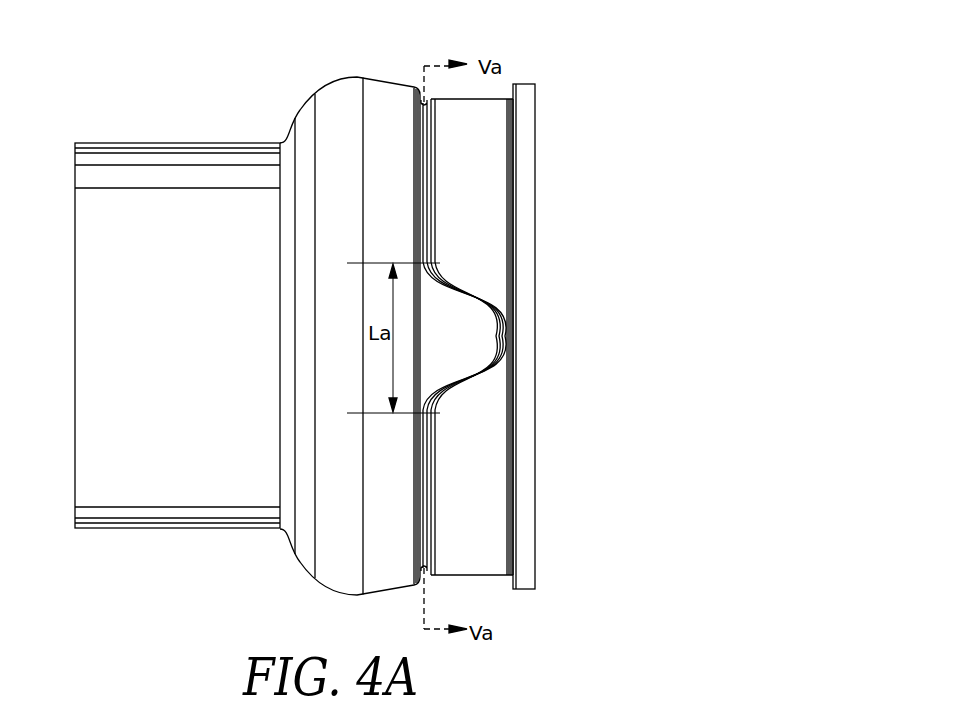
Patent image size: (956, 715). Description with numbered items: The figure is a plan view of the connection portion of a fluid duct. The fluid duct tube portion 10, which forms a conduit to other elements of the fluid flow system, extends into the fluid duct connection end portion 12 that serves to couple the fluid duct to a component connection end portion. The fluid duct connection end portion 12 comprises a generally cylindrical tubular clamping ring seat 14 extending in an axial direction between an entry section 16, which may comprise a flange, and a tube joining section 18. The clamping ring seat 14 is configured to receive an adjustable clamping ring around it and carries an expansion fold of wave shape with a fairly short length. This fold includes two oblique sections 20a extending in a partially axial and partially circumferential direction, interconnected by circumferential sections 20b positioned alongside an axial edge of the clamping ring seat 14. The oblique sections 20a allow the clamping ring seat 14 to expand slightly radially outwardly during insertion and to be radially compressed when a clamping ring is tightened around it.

The fluid duct tube portion 10 is at (162, 541).
The fluid duct connection end portion 12 is at (408, 63).
The clamping ring seat 14 is at (475, 587).
The entry section 16 is at (531, 602).
The tube joining section 18 is at (308, 591).
The oblique section 20a is at (462, 298).
The circumferential section 20b is at (423, 182).